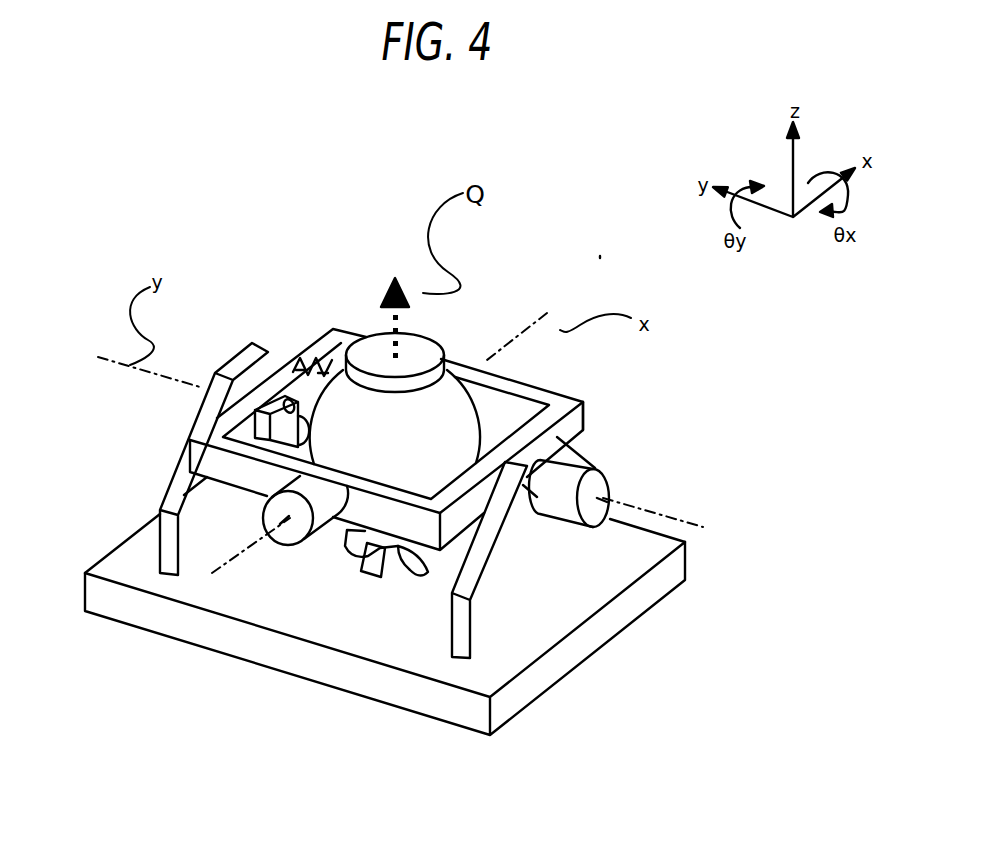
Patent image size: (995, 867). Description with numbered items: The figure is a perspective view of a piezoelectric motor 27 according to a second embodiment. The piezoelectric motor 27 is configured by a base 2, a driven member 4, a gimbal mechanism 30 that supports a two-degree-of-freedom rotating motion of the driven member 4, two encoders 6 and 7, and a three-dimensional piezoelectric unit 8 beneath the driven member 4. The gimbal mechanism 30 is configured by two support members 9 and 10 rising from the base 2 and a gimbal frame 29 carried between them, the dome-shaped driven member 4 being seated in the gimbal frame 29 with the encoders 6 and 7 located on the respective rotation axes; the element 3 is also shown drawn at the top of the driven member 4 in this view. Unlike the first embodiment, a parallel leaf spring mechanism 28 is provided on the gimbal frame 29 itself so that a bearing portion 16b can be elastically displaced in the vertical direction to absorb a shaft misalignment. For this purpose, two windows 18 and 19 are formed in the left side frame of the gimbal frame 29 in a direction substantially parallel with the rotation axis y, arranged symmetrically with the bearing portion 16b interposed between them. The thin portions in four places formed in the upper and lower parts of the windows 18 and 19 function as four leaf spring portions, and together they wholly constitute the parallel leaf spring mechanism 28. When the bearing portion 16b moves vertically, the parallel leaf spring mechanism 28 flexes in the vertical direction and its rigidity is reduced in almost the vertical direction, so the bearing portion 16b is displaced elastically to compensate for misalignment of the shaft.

The base 2 is at (620, 633).
The lens holder dome 3 is at (423, 353).
The driven member 4 is at (328, 362).
The encoder 6 is at (595, 468).
The encoder 7 is at (300, 533).
The three-dimensional piezoelectric unit 8 is at (396, 584).
The support member 9 is at (158, 545).
The support member 10 is at (520, 593).
The bearing portion 16b is at (252, 442).
The window 18 is at (258, 416).
The window 19 is at (323, 362).
The piezoelectric motor 27 is at (600, 256).
The parallel leaf spring mechanism 28 is at (302, 360).
The gimbal frame 29 is at (517, 383).
The gimbal mechanism 30 is at (597, 399).